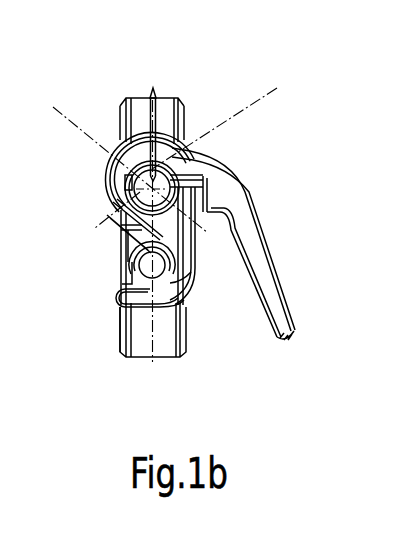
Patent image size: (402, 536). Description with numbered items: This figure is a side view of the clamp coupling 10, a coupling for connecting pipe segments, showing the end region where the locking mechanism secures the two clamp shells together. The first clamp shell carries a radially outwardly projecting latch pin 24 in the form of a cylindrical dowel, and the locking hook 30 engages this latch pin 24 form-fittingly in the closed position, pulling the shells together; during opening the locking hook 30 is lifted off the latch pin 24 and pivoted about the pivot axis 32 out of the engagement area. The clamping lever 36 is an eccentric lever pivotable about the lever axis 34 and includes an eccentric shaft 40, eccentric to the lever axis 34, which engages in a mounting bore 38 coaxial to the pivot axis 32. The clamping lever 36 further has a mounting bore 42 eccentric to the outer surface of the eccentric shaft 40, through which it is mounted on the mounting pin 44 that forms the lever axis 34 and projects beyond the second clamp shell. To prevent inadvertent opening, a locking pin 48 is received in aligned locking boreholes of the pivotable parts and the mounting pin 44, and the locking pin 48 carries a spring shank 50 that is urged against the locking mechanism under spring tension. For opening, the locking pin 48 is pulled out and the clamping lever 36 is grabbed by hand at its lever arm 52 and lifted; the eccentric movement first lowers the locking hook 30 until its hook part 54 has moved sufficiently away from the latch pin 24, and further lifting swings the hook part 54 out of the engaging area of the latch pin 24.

The clamp coupling 10 is at (104, 211).
The latch pin 24 is at (187, 282).
The locking hook 30 is at (207, 300).
The pivot axis 32 is at (128, 158).
The lever axis 34 is at (198, 148).
The clamping lever 36 is at (214, 172).
The mounting bore 38 is at (108, 196).
The eccentric shaft 40 is at (123, 145).
The mounting bore 42 is at (183, 257).
The mounting pin 44 is at (110, 218).
The locking pin 48 is at (201, 97).
The spring shank 50 is at (158, 121).
The lever arm 52 is at (287, 337).
The hook part 54 is at (132, 296).